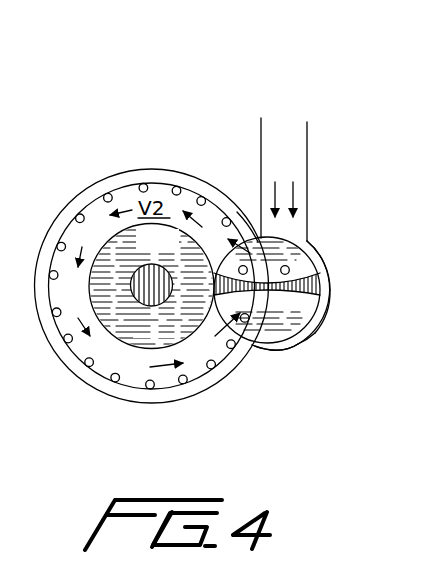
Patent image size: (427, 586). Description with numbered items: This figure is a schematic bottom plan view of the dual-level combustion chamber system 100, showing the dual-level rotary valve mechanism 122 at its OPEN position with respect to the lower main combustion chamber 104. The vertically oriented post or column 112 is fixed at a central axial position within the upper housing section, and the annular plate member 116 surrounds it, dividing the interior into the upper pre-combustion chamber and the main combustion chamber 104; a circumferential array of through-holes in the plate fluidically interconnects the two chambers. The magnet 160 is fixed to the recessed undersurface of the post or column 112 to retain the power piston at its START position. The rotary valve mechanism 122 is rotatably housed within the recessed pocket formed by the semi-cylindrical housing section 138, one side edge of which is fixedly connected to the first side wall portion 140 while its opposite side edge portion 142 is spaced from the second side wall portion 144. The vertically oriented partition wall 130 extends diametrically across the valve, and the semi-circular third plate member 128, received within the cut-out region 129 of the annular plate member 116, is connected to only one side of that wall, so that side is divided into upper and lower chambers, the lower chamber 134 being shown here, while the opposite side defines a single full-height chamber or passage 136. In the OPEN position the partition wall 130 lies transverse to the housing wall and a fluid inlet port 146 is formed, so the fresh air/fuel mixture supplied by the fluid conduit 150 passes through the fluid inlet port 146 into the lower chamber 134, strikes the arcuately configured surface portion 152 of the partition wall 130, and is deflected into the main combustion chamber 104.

The dual-level combustion chamber system 100 is at (163, 146).
The main combustion chamber 104 is at (93, 213).
The post or column 112 is at (173, 337).
The annular plate member 116 is at (86, 302).
The dual-level rotary valve mechanism 122 is at (307, 240).
The third plate member 128 is at (311, 281).
The cut-out region 129 is at (227, 341).
The partition wall 130 is at (318, 308).
The lower chamber 134 is at (263, 239).
The single chamber or passage 136 is at (294, 333).
The semi-cylindrical housing section 138 is at (282, 344).
The first side wall portion 140 is at (257, 348).
The side edge portion 142 is at (305, 258).
The second side wall portion 144 is at (250, 237).
The fluid inlet port 146 is at (282, 182).
The fluid conduit 150 is at (261, 118).
The arcuately configured surface portion 152 is at (177, 251).
The magnet 160 is at (133, 275).